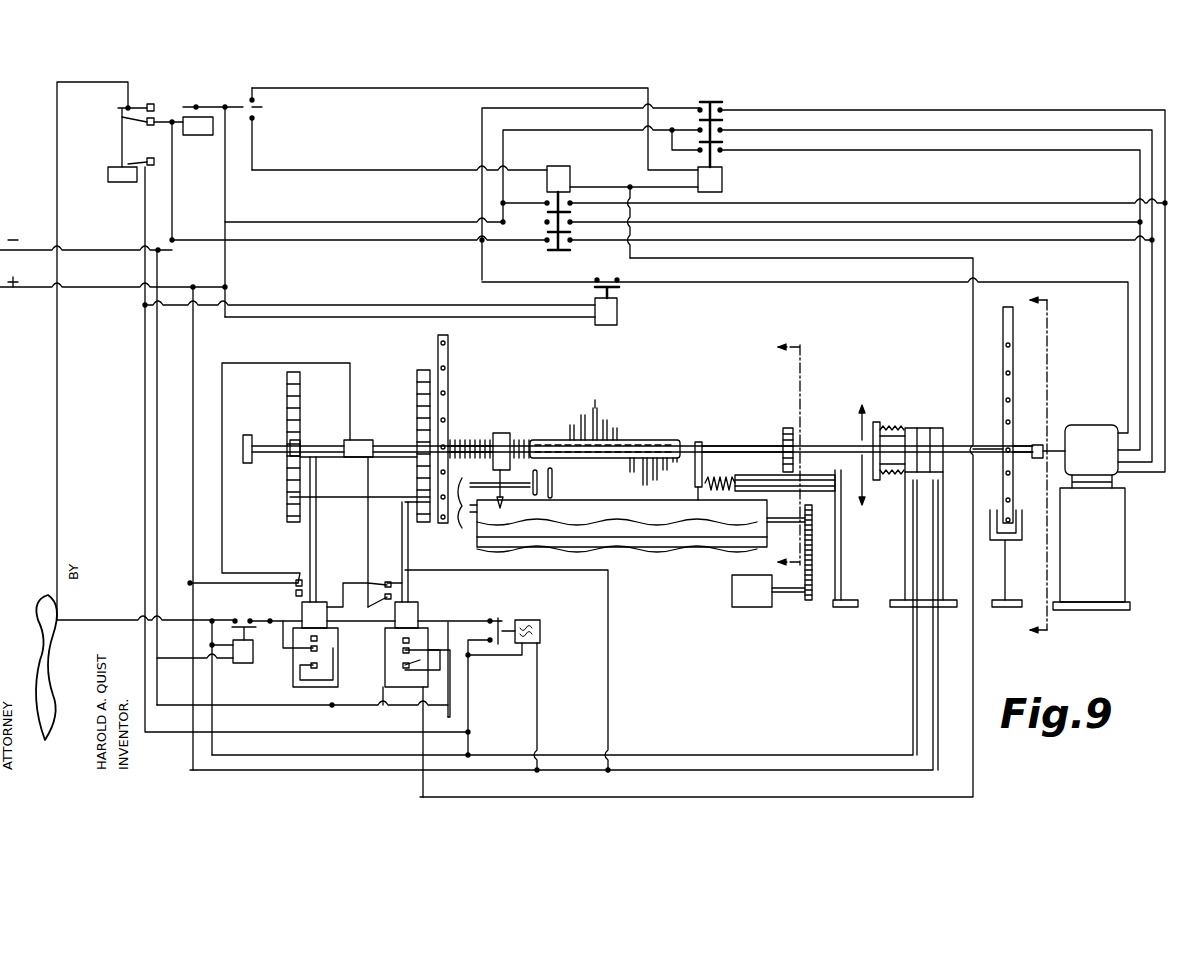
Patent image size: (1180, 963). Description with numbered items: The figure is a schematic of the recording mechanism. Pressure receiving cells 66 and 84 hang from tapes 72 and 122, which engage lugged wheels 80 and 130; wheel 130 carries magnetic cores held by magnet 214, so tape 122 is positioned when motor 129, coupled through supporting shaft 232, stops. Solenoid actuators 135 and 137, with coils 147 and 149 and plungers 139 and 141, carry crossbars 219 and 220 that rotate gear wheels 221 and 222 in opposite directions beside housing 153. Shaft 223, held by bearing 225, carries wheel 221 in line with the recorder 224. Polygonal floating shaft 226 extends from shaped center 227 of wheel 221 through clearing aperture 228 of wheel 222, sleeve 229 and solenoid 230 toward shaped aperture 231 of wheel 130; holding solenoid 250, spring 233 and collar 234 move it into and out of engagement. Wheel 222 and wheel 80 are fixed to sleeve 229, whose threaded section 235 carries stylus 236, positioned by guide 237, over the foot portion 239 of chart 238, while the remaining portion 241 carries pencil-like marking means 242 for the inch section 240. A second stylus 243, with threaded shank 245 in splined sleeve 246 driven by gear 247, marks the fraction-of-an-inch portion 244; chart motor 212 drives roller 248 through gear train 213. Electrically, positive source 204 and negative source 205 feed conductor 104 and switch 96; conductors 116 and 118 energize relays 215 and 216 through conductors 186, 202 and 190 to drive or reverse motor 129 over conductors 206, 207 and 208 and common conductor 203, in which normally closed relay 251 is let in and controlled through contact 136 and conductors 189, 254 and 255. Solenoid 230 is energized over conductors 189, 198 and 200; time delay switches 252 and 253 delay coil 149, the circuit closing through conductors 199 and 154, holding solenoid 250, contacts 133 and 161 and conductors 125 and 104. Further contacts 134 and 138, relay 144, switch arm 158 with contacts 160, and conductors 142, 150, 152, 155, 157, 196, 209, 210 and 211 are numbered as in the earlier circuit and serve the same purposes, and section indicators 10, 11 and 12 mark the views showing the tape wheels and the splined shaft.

The section line 10- 10 is at (1053, 469).
The section line 11- 11 is at (770, 451).
The section line 12- 12 is at (857, 462).
The pressure receiving cell 66 is at (118, 182).
The tape 72 is at (448, 355).
The lugged wheel 80 is at (450, 410).
The pressure receiving cell 84 is at (198, 136).
The diaphragm responsive switch mechanism 96 is at (229, 122).
The conductor 104 is at (226, 192).
The conductor 116 is at (362, 88).
The conductor 118 is at (352, 170).
The tape 122 is at (1014, 370).
The conductor 125 is at (158, 525).
The motor 129 is at (1088, 432).
The lugged wheel 130 is at (1014, 400).
The contact 133 is at (298, 580).
The switch contact 134 is at (150, 104).
The solenoid actuator 135 is at (278, 675).
The contact 136 is at (152, 158).
The solenoid actuator 137 is at (384, 638).
The switch contact 138 is at (122, 122).
The push rod 139 is at (316, 552).
The push rod 141 is at (410, 550).
The conductor 142 is at (408, 222).
The relay 144 is at (546, 195).
The solenoid 147 is at (302, 614).
The coil 149 is at (420, 612).
The conductor 150 is at (66, 128).
The conductor 152 is at (610, 648).
The switch housing 153 is at (262, 363).
The conductor 154 is at (173, 200).
The conductor 155 is at (460, 670).
The relay contact 157 is at (288, 650).
The switch arm 158 is at (386, 582).
The switch contact 160 is at (386, 600).
The contact 161 is at (292, 588).
The conductor 186 is at (972, 316).
The conductor 189 is at (82, 410).
The conductor 190 is at (188, 448).
The conductor 196 is at (482, 130).
The conductor 198 is at (798, 755).
The conductor 199 is at (470, 700).
The conductor 200 is at (938, 690).
The conductor 202 is at (340, 694).
The common motor conductor 203 is at (828, 282).
The positive power source 204 is at (30, 289).
The negative power source 205 is at (22, 247).
The conductor 206 is at (1128, 103).
The conductor 207 is at (1045, 130).
The conductor 208 is at (1070, 152).
The conductor 209 is at (798, 203).
The conductor 210 is at (886, 222).
The conductor 211 is at (1050, 242).
The chart driving motor 212 is at (746, 608).
The gear train 213 is at (810, 602).
The magnet 214 is at (1022, 538).
The relay 215 is at (729, 147).
The relay 216 is at (634, 205).
The crossbar 219 is at (328, 458).
The crossbar 220 is at (378, 497).
The gear wheel 221 is at (287, 388).
The gear wheel 222 is at (417, 380).
The shaft 223 is at (262, 440).
The recorder 224 is at (605, 421).
The bearing 225 is at (248, 463).
The polygonal shaft 226 is at (736, 438).
The shaped center 227 is at (302, 442).
The clearing aperture 228 is at (418, 442).
The sleeve 229 is at (553, 430).
The solenoid 230 is at (936, 428).
The shaped aperture 231 is at (1000, 444).
The supporting shaft 232 is at (1022, 444).
The spring means 233 is at (880, 476).
The collar 234 is at (882, 424).
The threaded section 235 is at (518, 440).
The stylus 236 is at (502, 432).
The guide 237 is at (486, 482).
The chart 238 is at (610, 522).
The foot recording portion 239 is at (500, 506).
The inch recording section 240 is at (618, 510).
The remaining portion of sleeve 241 is at (642, 440).
The pencil-like marking means 242 is at (596, 400).
The second stylus 243 is at (695, 484).
The fraction-of-an-inch portion 244 is at (758, 510).
The threaded shank 245 is at (712, 470).
The splined sleeve 246 is at (800, 473).
The gear 247 is at (782, 428).
The roller 248 is at (672, 530).
The holding solenoid 250 is at (358, 440).
The normally closed relay 251 is at (617, 308).
The time delay switch 252 is at (234, 665).
The time delay switch 253 is at (542, 622).
The conductor 254 is at (378, 305).
The conductor 255 is at (402, 317).